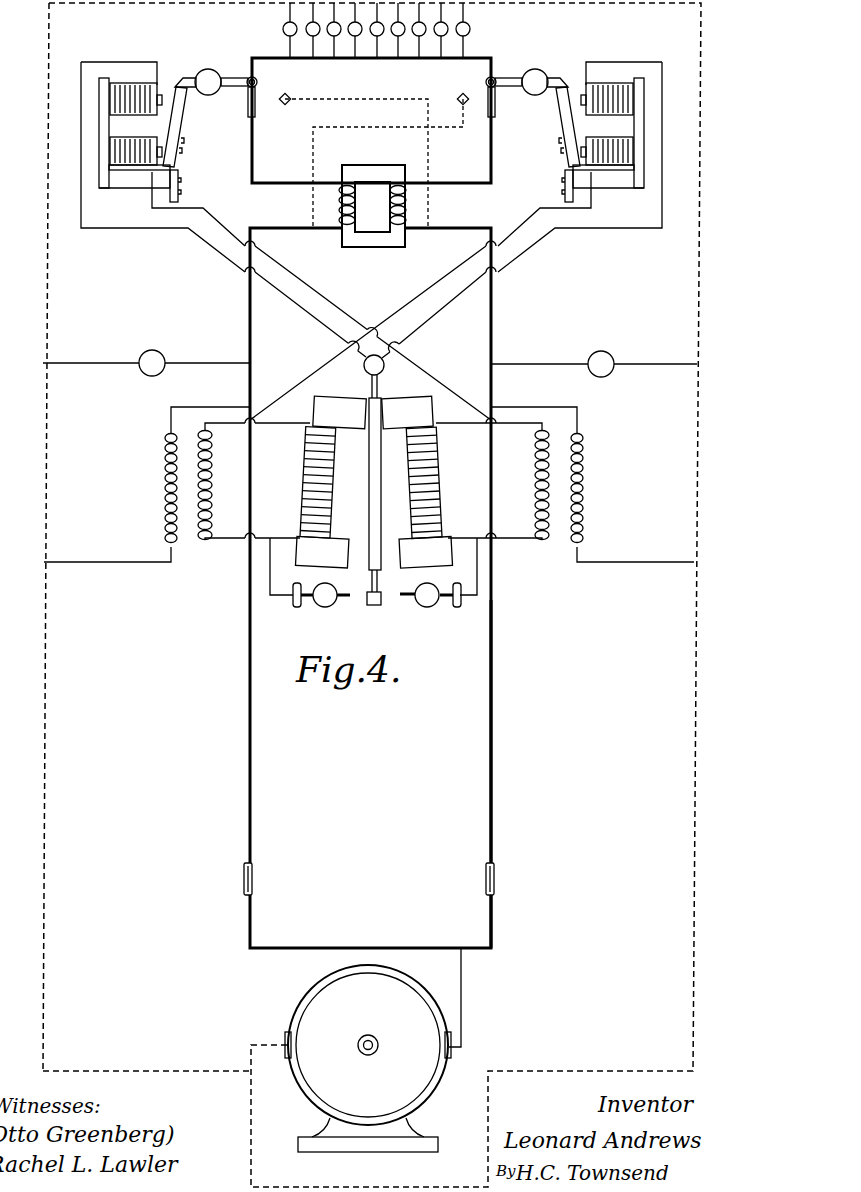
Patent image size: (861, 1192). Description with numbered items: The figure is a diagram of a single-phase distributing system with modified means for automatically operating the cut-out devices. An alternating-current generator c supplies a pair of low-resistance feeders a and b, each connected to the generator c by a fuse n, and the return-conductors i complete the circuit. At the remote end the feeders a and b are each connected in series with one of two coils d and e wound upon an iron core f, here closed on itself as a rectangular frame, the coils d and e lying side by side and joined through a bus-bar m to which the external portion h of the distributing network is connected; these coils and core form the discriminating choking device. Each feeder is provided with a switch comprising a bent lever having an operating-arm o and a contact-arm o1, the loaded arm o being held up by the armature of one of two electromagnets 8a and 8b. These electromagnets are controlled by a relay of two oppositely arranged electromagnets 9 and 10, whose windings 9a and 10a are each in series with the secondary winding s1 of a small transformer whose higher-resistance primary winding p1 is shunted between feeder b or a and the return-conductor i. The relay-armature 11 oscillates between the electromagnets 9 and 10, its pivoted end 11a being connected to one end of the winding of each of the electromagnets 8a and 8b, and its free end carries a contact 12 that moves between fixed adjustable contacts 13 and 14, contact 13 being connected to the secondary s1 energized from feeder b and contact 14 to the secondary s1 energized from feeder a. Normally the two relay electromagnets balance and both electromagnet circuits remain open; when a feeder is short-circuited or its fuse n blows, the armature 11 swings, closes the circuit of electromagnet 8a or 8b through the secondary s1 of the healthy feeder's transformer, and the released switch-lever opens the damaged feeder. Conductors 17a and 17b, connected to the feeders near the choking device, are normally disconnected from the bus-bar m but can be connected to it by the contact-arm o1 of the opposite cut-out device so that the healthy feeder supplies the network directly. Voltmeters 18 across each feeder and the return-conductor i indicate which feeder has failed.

The external portion of the distributing network h is at (376, 30).
The bus-bar m is at (366, 62).
The operating-arm of switch-lever o is at (231, 78).
The contact-arm of switch-lever o1 is at (247, 95).
The electromagnet 8a is at (163, 167).
The electromagnet 8b is at (580, 167).
The conductor 17a is at (311, 148).
The conductor 17b is at (430, 142).
The coil of discriminating choking device d is at (339, 212).
The coil of discriminating choking device e is at (407, 214).
The iron core f is at (377, 248).
The pendulum ball contact 11a is at (396, 356).
The relay-armature 11 is at (382, 490).
The contact 12 is at (374, 606).
The relay electromagnet 10 is at (330, 482).
The winding of relay electromagnet 10a is at (304, 478).
The relay electromagnet 9 is at (417, 482).
The winding of relay electromagnet 9a is at (447, 478).
The fixed adjustable contact 13 is at (407, 600).
The fixed adjustable contact 14 is at (336, 607).
The voltmeter 18 is at (156, 351).
The primary winding p1 is at (163, 480).
The secondary winding s1 is at (214, 480).
The feeder a is at (252, 745).
The feeder b is at (489, 748).
The fuse n is at (252, 880).
The return-conductor i is at (372, 595).
The alternating-current generator c is at (373, 1050).